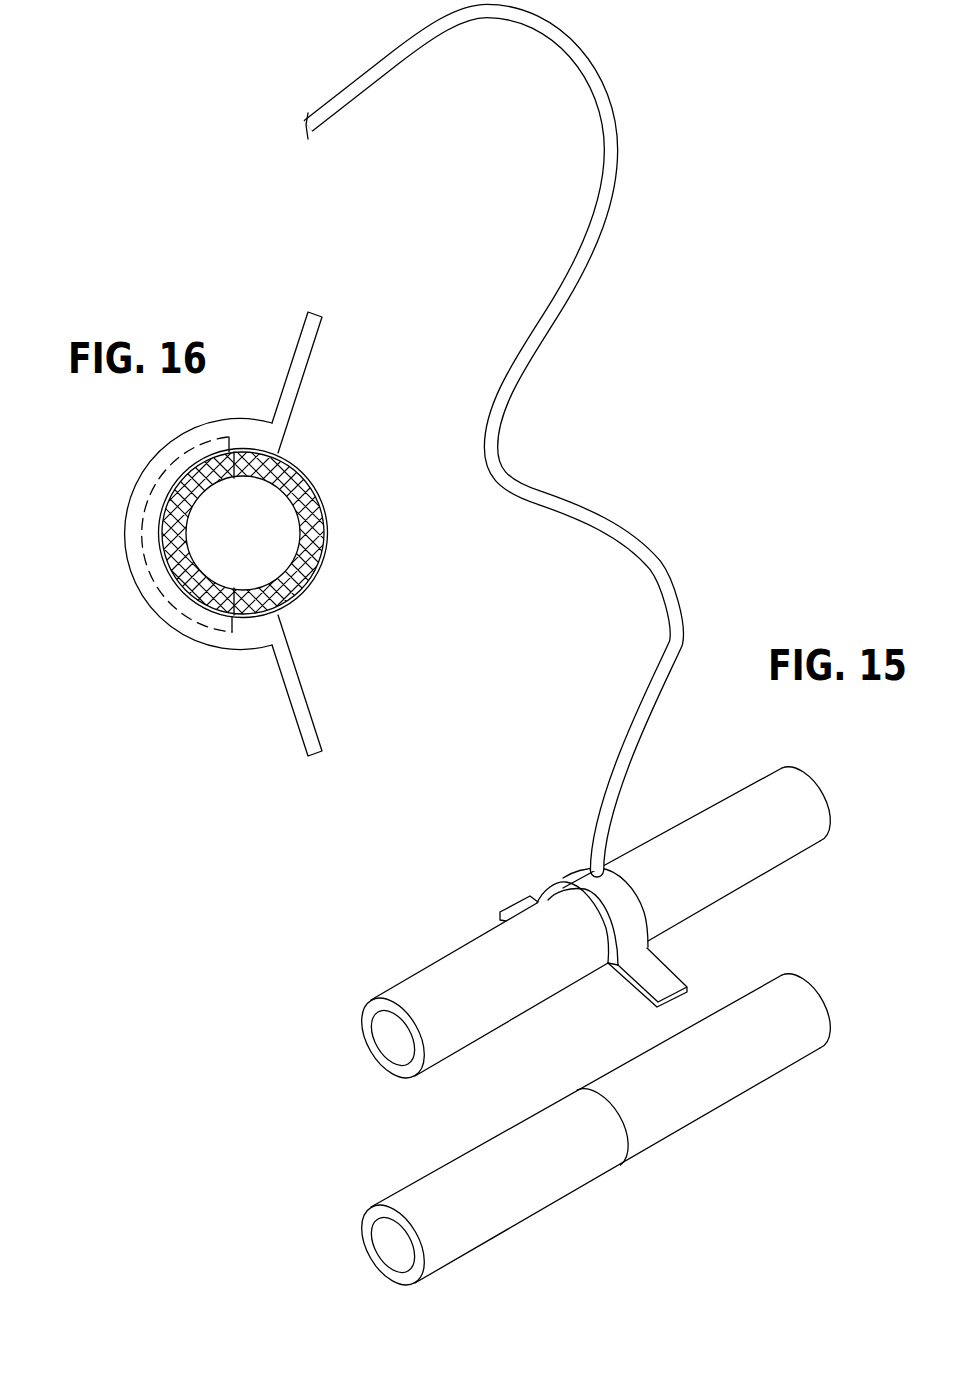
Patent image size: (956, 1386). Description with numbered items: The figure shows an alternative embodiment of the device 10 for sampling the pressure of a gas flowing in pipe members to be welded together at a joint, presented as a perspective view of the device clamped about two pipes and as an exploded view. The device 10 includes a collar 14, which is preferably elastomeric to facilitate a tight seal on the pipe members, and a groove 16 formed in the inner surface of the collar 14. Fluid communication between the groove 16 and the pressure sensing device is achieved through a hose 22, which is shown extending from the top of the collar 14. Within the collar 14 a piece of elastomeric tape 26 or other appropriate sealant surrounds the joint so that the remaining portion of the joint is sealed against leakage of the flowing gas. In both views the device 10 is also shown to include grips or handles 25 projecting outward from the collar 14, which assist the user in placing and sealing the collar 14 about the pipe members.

In FIG. 16, the device 10 is at (208, 534).
In FIG. 15, the device 10 is at (626, 879).
In FIG. 16, the collar 14 is at (147, 534).
In FIG. 15, the collar 14 is at (625, 893).
In FIG. 16, the groove 16 is at (157, 506).
In FIG. 15, the hose 22 is at (670, 662).
In FIG. 16, the grips or handles 25 is at (296, 408).
In FIG. 15, the grips or handles 25 is at (660, 955).
In FIG. 16, the elastomeric tape 26 is at (318, 490).